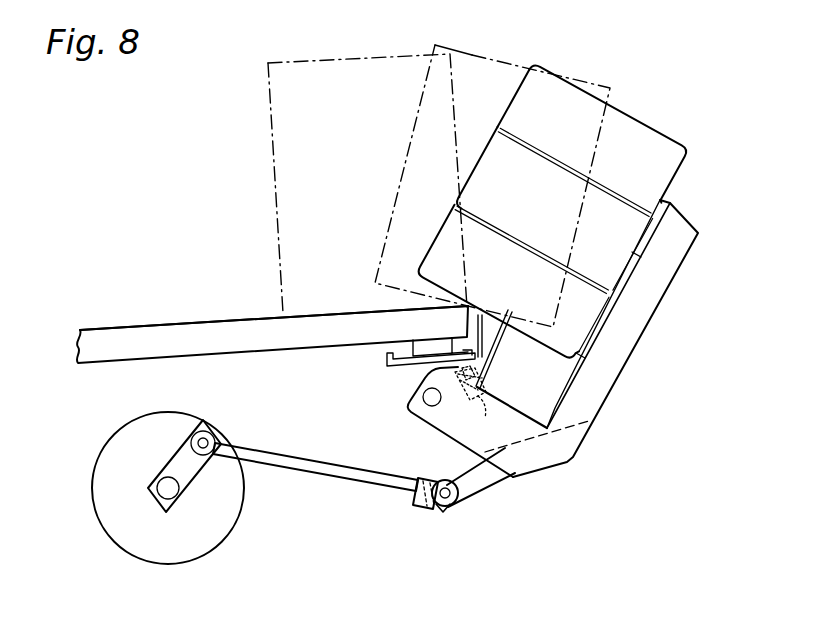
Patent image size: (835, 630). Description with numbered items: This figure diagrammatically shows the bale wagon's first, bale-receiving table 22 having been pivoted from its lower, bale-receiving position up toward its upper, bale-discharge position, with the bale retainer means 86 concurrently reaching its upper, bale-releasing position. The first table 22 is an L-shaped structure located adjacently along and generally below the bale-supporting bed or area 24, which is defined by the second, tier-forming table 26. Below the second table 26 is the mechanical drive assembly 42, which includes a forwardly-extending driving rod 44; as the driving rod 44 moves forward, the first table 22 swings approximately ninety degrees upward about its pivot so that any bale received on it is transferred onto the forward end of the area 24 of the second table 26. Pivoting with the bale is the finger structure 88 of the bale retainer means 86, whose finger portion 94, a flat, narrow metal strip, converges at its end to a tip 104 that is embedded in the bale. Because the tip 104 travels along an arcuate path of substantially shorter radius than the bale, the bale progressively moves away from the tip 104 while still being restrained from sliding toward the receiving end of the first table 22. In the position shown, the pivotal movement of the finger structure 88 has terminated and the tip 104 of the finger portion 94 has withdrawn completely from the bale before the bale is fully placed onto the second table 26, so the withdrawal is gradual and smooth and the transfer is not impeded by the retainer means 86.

The first bale-receiving table 22 is at (664, 302).
The bale-supporting bed 24 is at (299, 312).
The second tier-forming table 26 is at (229, 313).
The mechanical drive assembly 42 is at (207, 419).
The driving rod 44 is at (373, 470).
The bale retainer means 86 is at (493, 331).
The finger structure 88 is at (477, 422).
The finger portion 94 is at (497, 350).
The tip 104 is at (492, 336).